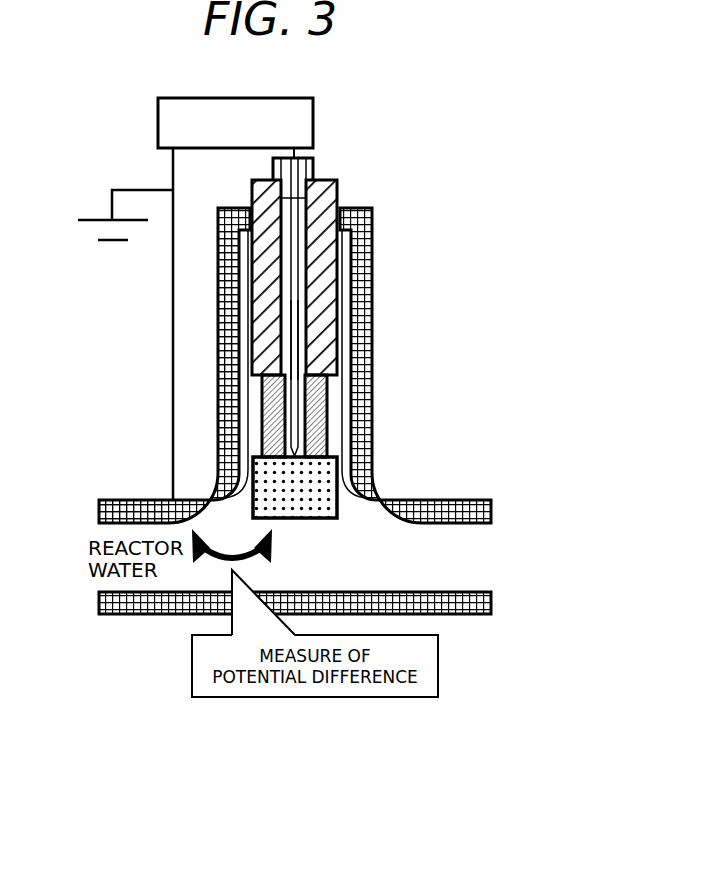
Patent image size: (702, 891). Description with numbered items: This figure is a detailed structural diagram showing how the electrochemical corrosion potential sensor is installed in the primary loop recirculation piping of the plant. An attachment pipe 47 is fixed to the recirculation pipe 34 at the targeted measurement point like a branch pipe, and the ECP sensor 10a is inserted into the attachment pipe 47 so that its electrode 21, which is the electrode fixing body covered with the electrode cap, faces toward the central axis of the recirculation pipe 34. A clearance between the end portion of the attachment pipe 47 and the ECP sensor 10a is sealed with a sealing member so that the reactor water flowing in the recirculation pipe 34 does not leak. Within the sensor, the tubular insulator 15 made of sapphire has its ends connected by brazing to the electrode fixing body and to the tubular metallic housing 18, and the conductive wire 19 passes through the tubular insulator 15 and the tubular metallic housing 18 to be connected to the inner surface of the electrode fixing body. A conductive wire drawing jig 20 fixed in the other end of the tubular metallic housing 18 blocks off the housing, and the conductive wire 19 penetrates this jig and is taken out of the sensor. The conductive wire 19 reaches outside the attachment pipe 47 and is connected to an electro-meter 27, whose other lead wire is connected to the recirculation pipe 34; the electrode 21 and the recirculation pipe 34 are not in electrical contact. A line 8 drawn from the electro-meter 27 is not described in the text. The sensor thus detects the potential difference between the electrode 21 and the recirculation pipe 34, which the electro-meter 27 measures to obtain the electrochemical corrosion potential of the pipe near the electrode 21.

The electro-meter 27 is at (158, 122).
The conductive wire drawing jig 20 is at (302, 172).
The ECP sensor 10a is at (338, 183).
The tubular metallic housing 18 is at (328, 248).
The conductive wire 19 is at (298, 333).
The tubular insulator 15 is at (322, 411).
The electrode 21 is at (322, 490).
The attachment pipe 47 is at (218, 308).
The sheath tube 8 is at (173, 352).
The recirculation pipe 34 is at (133, 500).